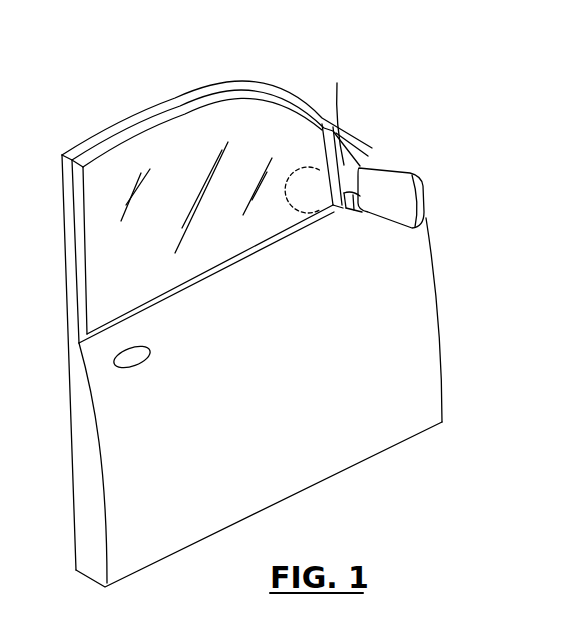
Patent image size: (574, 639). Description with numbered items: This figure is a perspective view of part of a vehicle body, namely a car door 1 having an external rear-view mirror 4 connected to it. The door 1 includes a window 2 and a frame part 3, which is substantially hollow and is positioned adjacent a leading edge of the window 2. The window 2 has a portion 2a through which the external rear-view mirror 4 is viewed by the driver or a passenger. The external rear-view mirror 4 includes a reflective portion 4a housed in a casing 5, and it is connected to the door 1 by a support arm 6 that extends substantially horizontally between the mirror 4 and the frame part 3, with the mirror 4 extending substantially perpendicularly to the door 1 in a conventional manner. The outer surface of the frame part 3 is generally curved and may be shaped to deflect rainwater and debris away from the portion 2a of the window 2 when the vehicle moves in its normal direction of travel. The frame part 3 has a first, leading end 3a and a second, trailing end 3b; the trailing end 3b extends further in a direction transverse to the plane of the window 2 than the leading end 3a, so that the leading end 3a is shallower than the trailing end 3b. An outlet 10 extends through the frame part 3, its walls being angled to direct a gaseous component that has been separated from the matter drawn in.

The car door 1 is at (113, 204).
The window 2 is at (168, 193).
The portion of the window 2a is at (310, 193).
The frame part 3 is at (346, 153).
The first, leading end of the frame part 3a is at (367, 155).
The second, trailing end of the frame part 3b is at (349, 112).
The external rear-view mirror 4 is at (392, 201).
The reflective portion 4a is at (398, 212).
The casing 5 is at (427, 213).
The support arm 6 is at (348, 208).
The outlet 10 is at (334, 209).